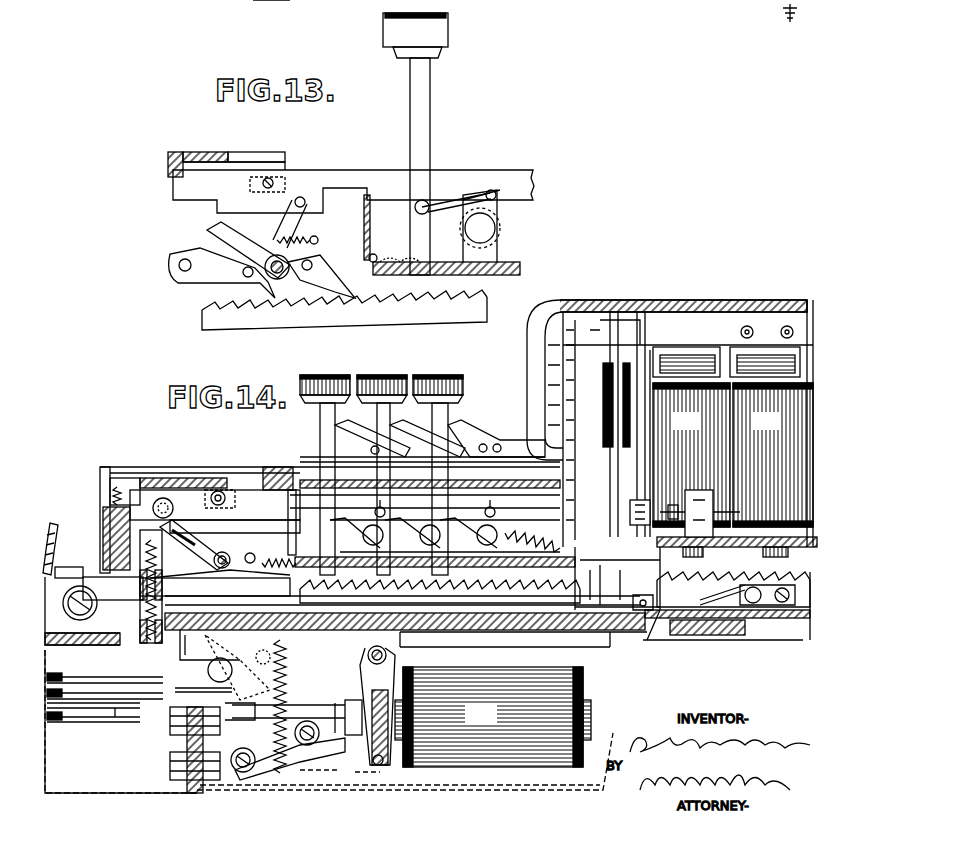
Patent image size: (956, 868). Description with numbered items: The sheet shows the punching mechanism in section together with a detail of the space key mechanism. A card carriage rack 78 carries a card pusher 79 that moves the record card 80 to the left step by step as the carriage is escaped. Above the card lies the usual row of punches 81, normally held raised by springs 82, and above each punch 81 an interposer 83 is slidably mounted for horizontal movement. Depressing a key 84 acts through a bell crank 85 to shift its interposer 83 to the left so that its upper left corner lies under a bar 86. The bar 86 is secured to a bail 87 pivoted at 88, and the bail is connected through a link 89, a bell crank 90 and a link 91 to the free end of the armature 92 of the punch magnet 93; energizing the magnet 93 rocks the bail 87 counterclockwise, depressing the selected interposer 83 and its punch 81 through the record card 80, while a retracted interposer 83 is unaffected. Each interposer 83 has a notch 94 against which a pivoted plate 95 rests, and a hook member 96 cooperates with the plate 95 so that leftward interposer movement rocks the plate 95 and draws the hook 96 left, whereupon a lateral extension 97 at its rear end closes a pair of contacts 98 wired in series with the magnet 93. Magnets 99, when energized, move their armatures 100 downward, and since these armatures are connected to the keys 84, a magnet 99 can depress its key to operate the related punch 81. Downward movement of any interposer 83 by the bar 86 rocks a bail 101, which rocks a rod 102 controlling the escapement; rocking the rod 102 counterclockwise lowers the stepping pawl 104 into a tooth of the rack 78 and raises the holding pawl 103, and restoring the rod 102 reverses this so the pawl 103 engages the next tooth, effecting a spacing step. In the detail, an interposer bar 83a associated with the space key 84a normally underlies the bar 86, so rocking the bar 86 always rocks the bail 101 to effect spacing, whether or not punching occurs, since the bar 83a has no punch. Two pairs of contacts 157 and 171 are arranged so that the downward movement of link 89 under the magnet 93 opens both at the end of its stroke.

In FIG. 13, the card carriage rack 78 is at (480, 305).
In FIG. 14, the card carriage rack 78 is at (708, 590).
In FIG. 14, the card pusher 79 is at (752, 605).
In FIG. 14, the record card 80 is at (643, 612).
In FIG. 14, the punch 81 is at (120, 540).
In FIG. 14, the spring 82 is at (100, 575).
In FIG. 14, the interposer 83 is at (193, 497).
In FIG. 13, the interposer bar 83a is at (200, 187).
In FIG. 14, the key 84 is at (318, 380).
In FIG. 13, the space key 84a is at (431, 105).
In FIG. 14, the bell crank 85 is at (355, 520).
In FIG. 13, the bar 86 is at (168, 172).
In FIG. 14, the bar 86 is at (125, 478).
In FIG. 13, the bail 87 is at (212, 152).
In FIG. 14, the bail 87 is at (165, 480).
In FIG. 13, the pivot 88 is at (286, 176).
In FIG. 14, the pivot 88 is at (222, 497).
In FIG. 14, the link 89 is at (180, 656).
In FIG. 14, the bell crank 90 is at (255, 703).
In FIG. 14, the link 91 is at (322, 775).
In FIG. 14, the armature 92 is at (365, 678).
In FIG. 14, the punch magnet 93 is at (493, 717).
In FIG. 14, the notch 94 is at (268, 470).
In FIG. 13, the pivoted plate 95 is at (371, 231).
In FIG. 14, the pivoted plate 95 is at (284, 562).
In FIG. 14, the hook member 96 is at (290, 490).
In FIG. 14, the lateral extension 97 is at (670, 500).
In FIG. 14, the contacts 98 is at (640, 525).
In FIG. 14, the magnet 99 is at (733, 455).
In FIG. 14, the armature 100 is at (690, 315).
In FIG. 13, the bail 101 is at (258, 207).
In FIG. 14, the bail 101 is at (175, 533).
In FIG. 13, the rod 102 is at (292, 258).
In FIG. 14, the rod 102 is at (234, 545).
In FIG. 13, the holding pawl 103 is at (330, 280).
In FIG. 14, the holding pawl 103 is at (300, 582).
In FIG. 13, the stepping pawl 104 is at (208, 258).
In FIG. 14, the stepping pawl 104 is at (180, 588).
In FIG. 14, the contacts 157 is at (150, 690).
In FIG. 14, the contacts 171 is at (120, 718).